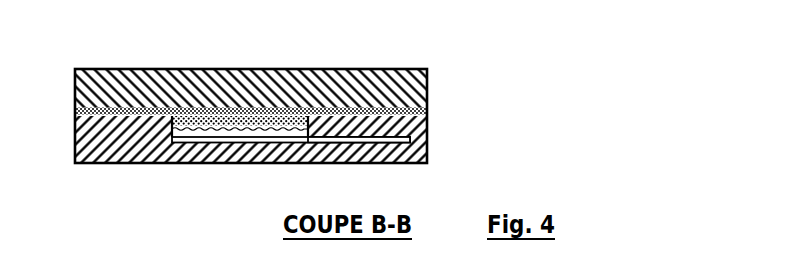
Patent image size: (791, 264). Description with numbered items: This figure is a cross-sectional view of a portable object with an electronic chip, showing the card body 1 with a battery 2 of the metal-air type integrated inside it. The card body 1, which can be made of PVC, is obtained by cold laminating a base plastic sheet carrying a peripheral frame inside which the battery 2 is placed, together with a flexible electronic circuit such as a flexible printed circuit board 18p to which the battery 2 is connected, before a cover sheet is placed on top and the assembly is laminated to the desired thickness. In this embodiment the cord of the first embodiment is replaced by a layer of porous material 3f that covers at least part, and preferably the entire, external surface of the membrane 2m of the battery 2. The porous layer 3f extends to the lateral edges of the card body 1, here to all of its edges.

The card body 1 is at (440, 133).
The layer of porous material 3f is at (137, 98).
The membrane of the battery 2m is at (233, 106).
The battery 2 is at (219, 155).
The flexible printed circuit board 18p is at (418, 142).